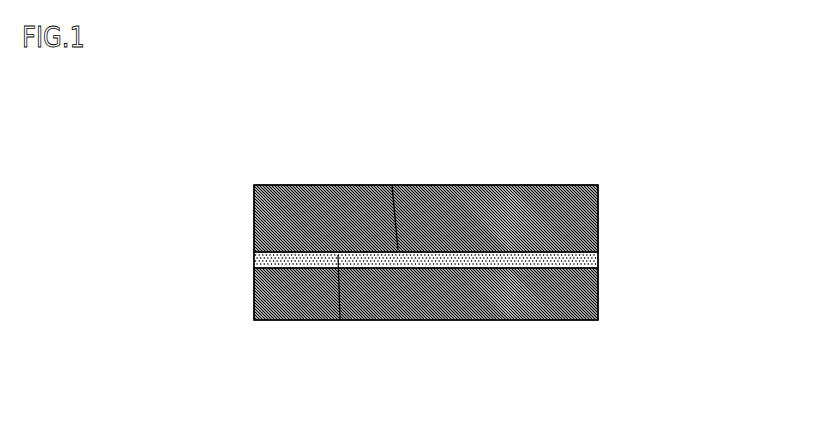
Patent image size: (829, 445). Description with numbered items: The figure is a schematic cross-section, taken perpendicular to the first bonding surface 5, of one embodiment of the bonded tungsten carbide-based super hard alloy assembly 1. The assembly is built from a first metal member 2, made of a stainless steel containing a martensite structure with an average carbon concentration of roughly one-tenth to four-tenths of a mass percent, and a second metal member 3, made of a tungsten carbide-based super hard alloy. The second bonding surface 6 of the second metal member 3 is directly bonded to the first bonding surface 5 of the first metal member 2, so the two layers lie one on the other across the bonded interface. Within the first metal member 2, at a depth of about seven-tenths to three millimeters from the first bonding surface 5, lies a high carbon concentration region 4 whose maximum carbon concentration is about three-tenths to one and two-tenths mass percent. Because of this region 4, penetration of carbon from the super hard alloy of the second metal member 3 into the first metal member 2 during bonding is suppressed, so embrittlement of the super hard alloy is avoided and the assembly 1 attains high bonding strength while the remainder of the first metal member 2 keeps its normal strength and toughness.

The bonded tungsten carbide-based super hard alloy assembly 1 is at (707, 116).
The first metal member 2 is at (252, 253).
The second metal member 3 is at (252, 185).
The high carbon concentration region 4 is at (598, 261).
The first bonding surface 5 is at (392, 185).
The second bonding surface 6 is at (340, 320).